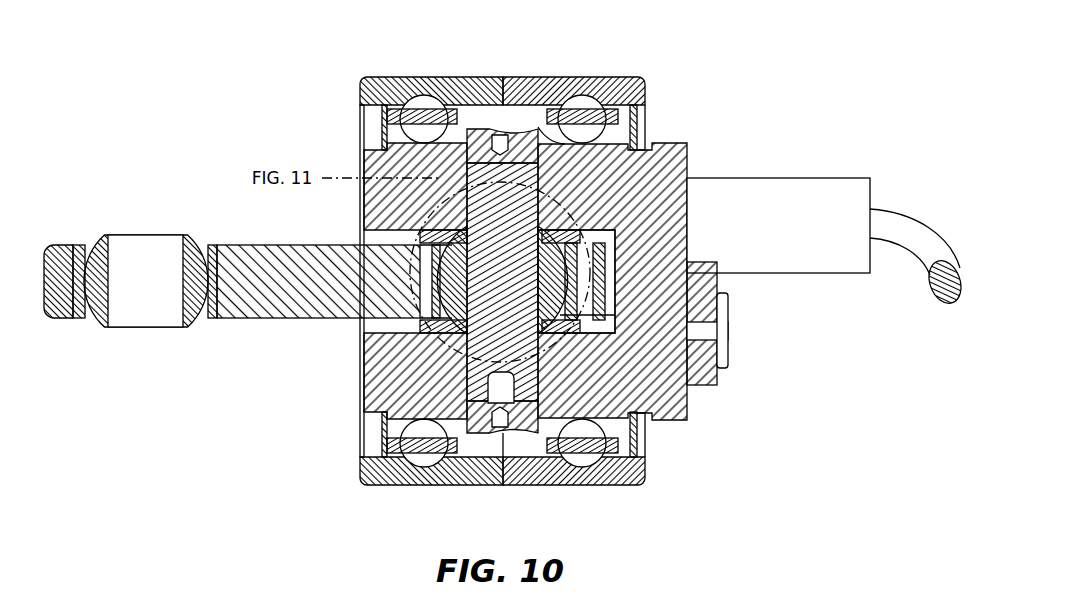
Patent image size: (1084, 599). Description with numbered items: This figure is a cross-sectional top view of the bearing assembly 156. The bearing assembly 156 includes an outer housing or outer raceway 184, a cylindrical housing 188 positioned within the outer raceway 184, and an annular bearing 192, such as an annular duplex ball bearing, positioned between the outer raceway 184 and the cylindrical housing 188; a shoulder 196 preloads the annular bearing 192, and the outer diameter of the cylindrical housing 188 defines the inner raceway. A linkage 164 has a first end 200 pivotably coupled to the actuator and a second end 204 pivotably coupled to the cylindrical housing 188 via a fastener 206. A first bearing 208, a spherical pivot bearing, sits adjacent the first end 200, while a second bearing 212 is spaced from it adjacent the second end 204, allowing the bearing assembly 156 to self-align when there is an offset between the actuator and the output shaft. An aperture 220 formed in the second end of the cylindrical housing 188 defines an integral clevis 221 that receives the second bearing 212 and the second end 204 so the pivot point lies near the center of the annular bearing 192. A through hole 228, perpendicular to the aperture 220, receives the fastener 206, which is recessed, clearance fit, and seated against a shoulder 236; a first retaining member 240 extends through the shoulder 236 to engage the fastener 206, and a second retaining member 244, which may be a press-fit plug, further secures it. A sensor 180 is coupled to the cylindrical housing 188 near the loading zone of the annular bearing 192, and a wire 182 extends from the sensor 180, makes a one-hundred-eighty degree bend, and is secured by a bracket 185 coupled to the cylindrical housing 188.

The bearing assembly 156 is at (626, 40).
The linkage 164 is at (290, 260).
The sensor 180 is at (797, 188).
The wire 182 is at (938, 263).
The outer raceway 184 is at (405, 103).
The bracket 185 is at (728, 352).
The cylindrical housing 188 is at (407, 166).
The annular bearing 192 is at (532, 128).
The shoulder 196 is at (637, 135).
The first end 200 is at (55, 248).
The second end 204 is at (601, 319).
The fastener 206 is at (560, 372).
The first bearing 208 is at (125, 298).
The second bearing 212 is at (433, 283).
The aperture 220 is at (617, 238).
The integral clevis 221 is at (595, 292).
The through hole 228 is at (428, 456).
The shoulder 236 is at (510, 291).
The first retaining member 240 is at (482, 425).
The second retaining member 244 is at (485, 134).